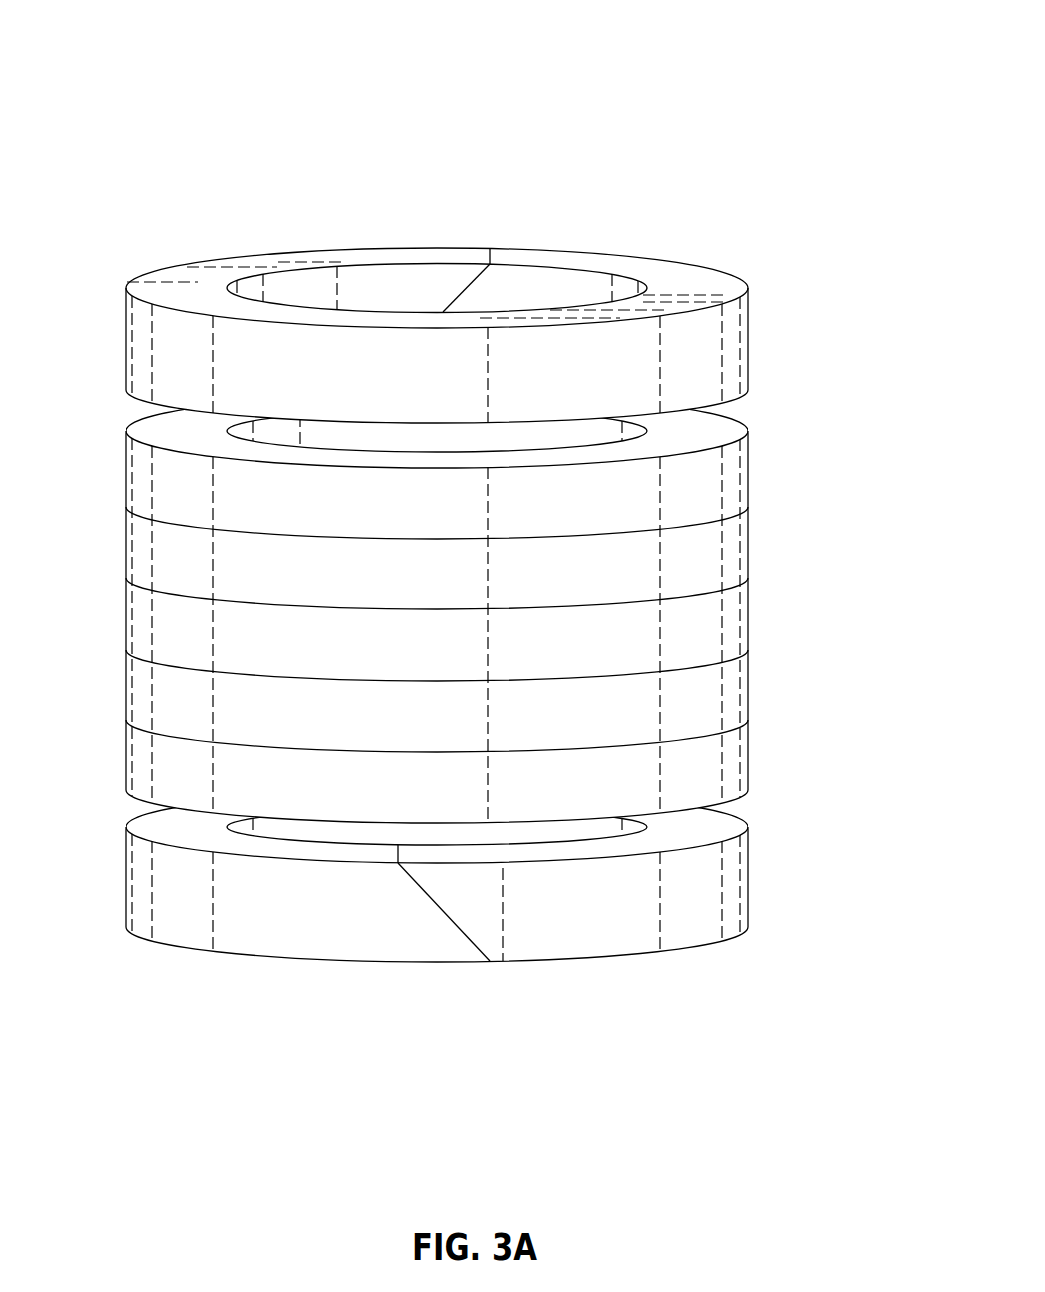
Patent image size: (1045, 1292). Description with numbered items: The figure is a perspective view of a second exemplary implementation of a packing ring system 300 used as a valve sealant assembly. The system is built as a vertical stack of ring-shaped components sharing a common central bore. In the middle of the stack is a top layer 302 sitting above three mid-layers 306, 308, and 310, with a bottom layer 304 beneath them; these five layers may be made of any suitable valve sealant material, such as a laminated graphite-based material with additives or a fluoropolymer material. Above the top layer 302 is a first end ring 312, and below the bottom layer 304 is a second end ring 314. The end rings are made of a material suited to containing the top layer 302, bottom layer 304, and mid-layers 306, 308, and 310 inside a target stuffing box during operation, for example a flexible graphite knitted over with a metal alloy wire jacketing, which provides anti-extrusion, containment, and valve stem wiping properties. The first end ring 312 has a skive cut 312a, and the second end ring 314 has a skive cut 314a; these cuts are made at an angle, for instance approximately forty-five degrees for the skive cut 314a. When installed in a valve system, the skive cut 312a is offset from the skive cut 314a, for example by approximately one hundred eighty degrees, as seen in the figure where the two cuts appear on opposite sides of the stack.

The packing ring system 300 is at (205, 76).
The top layer 302 is at (748, 465).
The bottom layer 304 is at (748, 752).
The mid-layer 306 is at (748, 535).
The mid-layer 308 is at (748, 607).
The mid-layer 310 is at (748, 680).
The first end ring 312 is at (748, 342).
The skive cut 312a is at (462, 288).
The second end ring 314 is at (748, 879).
The skive cut 314a is at (470, 938).